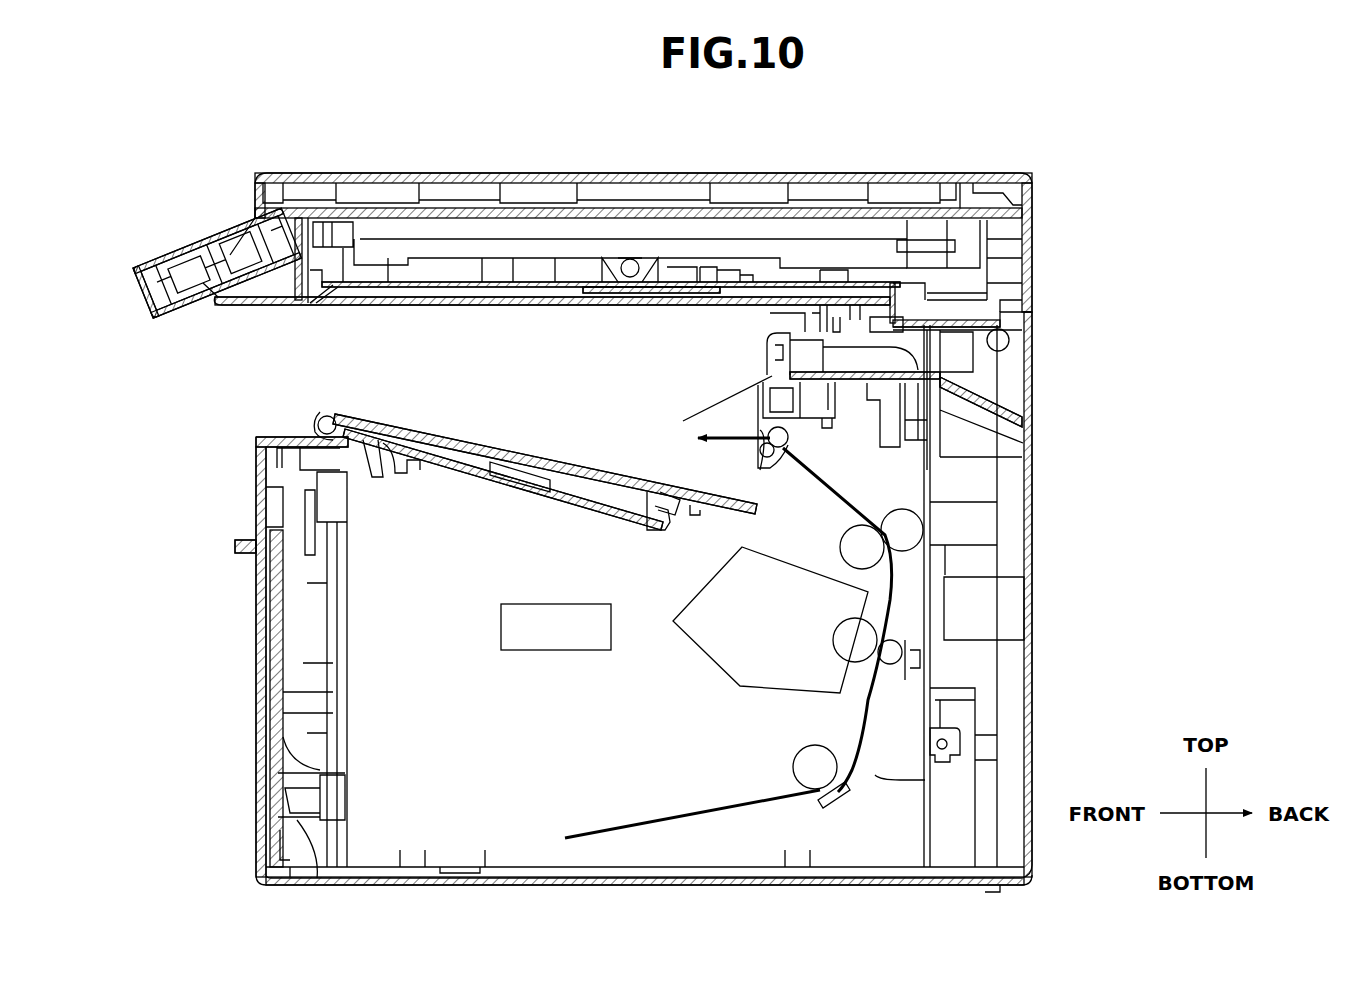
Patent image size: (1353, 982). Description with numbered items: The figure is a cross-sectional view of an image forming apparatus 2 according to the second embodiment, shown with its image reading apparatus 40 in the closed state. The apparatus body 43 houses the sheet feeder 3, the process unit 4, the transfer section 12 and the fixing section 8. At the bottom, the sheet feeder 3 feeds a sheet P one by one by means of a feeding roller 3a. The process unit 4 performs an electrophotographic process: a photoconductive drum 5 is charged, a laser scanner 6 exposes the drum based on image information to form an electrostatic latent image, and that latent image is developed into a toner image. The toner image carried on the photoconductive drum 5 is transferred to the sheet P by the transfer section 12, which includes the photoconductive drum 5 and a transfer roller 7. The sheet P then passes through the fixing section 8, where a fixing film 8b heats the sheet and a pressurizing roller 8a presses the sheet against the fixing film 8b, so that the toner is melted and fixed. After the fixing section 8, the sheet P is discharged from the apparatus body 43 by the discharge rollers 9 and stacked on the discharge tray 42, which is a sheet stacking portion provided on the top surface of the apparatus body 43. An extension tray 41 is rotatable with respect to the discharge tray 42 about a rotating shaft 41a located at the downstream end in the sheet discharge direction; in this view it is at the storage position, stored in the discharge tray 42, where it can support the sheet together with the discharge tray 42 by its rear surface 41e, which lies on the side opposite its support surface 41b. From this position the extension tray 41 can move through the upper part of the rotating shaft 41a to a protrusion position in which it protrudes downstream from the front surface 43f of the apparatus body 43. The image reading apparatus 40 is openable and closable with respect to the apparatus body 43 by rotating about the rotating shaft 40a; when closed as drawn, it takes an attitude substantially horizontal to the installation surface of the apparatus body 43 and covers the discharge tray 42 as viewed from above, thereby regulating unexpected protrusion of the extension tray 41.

The image forming apparatus 2 is at (890, 165).
The image reading apparatus 40 is at (740, 172).
The rotating shaft 40a is at (1010, 339).
The apparatus body 43 is at (1042, 538).
The front surface 43f is at (256, 500).
The extension tray 41 is at (498, 436).
The rotating shaft 41a is at (328, 416).
The support surface 41b is at (545, 492).
The rear surface 41e is at (570, 474).
The discharge tray 42 is at (680, 470).
The discharge rollers 9 is at (772, 430).
The fixing section 8 is at (928, 476).
The pressurizing roller 8a is at (912, 500).
The fixing film 8b is at (845, 540).
The process unit 4 is at (700, 582).
The photoconductive drum 5 is at (840, 642).
The transfer roller 7 is at (905, 662).
The transfer section 12 is at (912, 620).
The sheet feeder 3 is at (876, 762).
The feeding roller 3a is at (798, 770).
The laser scanner 6 is at (501, 630).
The sheet P is at (672, 818).